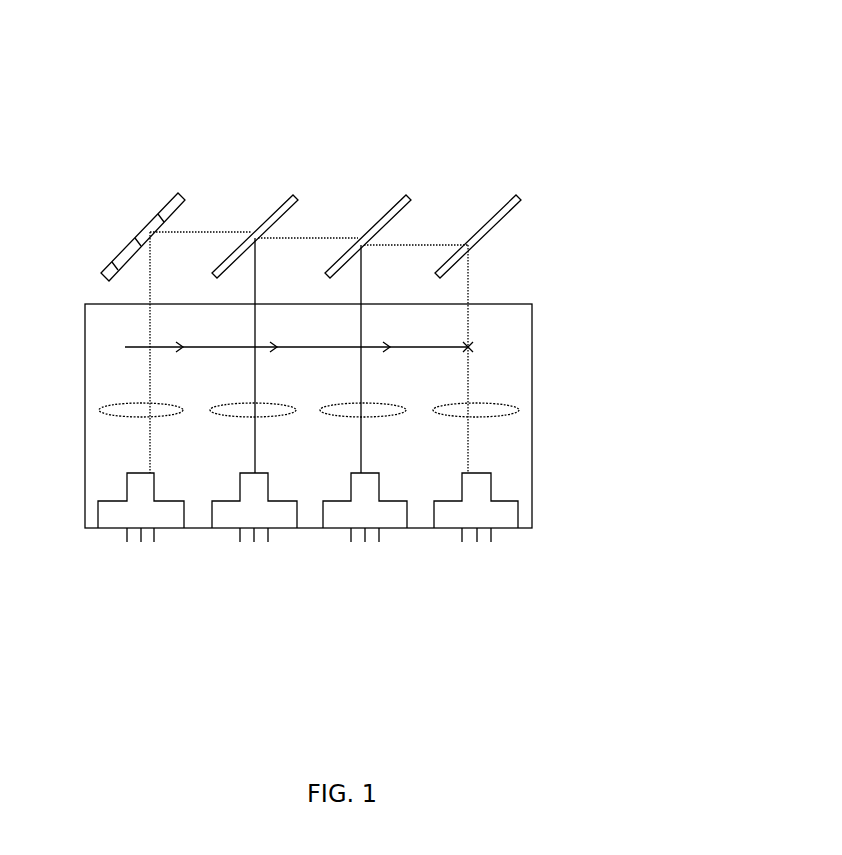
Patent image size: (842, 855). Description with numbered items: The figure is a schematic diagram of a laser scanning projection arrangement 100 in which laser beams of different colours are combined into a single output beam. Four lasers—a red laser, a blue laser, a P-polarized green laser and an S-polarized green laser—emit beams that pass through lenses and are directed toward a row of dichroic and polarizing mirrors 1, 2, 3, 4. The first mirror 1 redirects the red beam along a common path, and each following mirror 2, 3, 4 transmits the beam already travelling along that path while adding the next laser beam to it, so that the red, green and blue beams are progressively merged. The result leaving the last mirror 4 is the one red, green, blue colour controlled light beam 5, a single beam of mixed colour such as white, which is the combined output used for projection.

The laser light source system 100 is at (337, 92).
The mirror 1 is at (113, 243).
The mirror 2 is at (262, 216).
The mirror 3 is at (374, 216).
The mirror 4 is at (486, 216).
The RGB color controlled light beam 5 is at (570, 243).